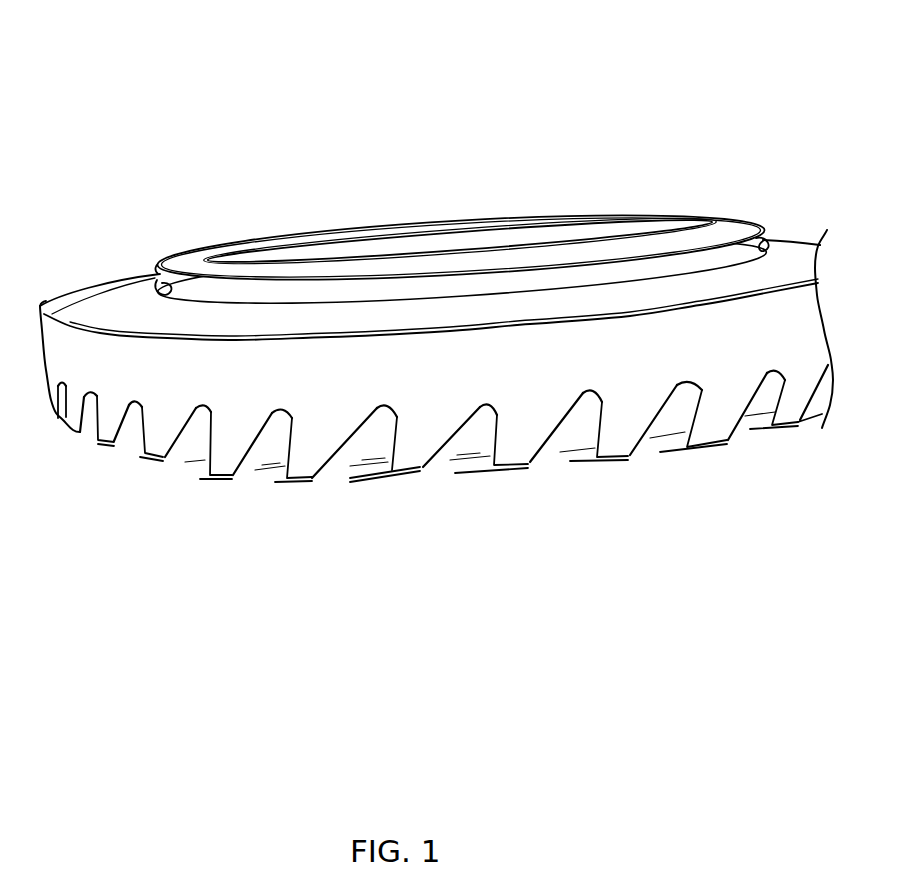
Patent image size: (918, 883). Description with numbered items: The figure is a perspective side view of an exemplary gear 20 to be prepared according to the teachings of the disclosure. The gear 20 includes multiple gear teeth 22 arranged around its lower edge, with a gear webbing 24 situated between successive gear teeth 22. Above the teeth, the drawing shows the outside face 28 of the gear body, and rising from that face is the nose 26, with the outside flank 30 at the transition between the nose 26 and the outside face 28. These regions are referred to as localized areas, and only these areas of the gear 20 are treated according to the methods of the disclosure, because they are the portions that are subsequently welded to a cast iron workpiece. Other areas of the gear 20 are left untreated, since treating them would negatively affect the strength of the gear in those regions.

The gear 20 is at (203, 96).
The gear teeth 22 is at (163, 450).
The gear webbing 24 is at (127, 447).
The nose 26 is at (193, 262).
The outside face 28 is at (108, 311).
The outside flank 30 is at (172, 268).